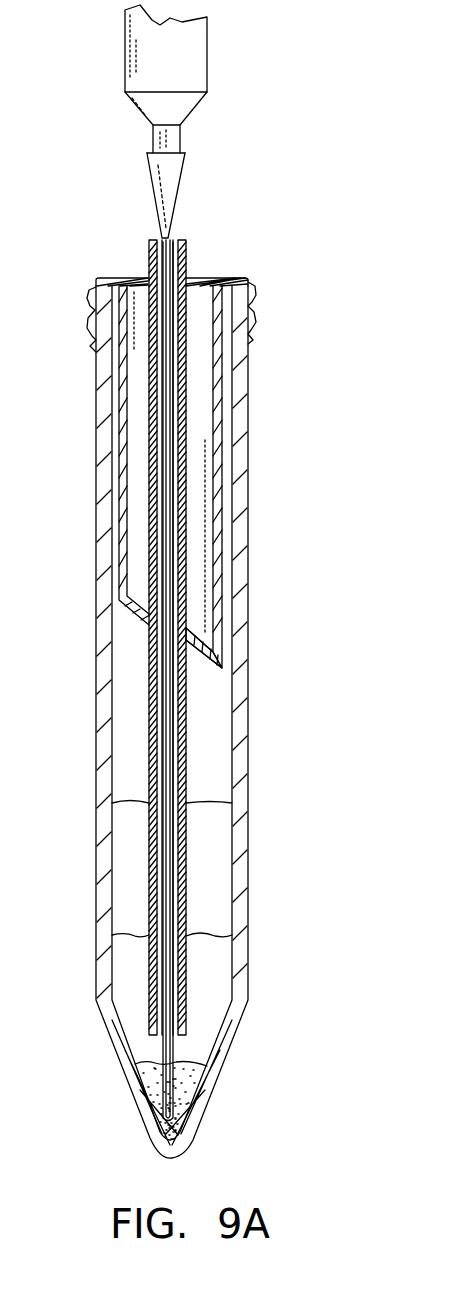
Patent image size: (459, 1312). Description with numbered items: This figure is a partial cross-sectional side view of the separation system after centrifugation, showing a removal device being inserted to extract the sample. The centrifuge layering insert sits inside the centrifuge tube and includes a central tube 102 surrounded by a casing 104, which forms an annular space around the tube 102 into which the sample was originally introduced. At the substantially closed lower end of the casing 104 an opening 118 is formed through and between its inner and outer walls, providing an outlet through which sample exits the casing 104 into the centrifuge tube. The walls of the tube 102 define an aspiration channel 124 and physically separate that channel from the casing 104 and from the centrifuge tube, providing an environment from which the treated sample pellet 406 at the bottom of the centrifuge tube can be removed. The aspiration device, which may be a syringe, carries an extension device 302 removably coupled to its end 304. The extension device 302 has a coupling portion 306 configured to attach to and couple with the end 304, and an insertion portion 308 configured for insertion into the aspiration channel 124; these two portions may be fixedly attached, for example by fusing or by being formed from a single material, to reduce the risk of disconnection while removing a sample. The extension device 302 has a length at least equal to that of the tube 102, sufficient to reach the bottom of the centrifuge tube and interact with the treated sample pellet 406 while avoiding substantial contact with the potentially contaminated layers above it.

The tube 102 is at (186, 680).
The casing 104 is at (222, 593).
The opening 118 is at (223, 650).
The aspiration channel 124 is at (175, 712).
The extension device 302 is at (178, 207).
The end of the aspiration device 304 is at (181, 142).
The coupling portion 306 is at (163, 171).
The insertion portion 308 is at (173, 1050).
The treated sample pellet 406 is at (188, 1088).